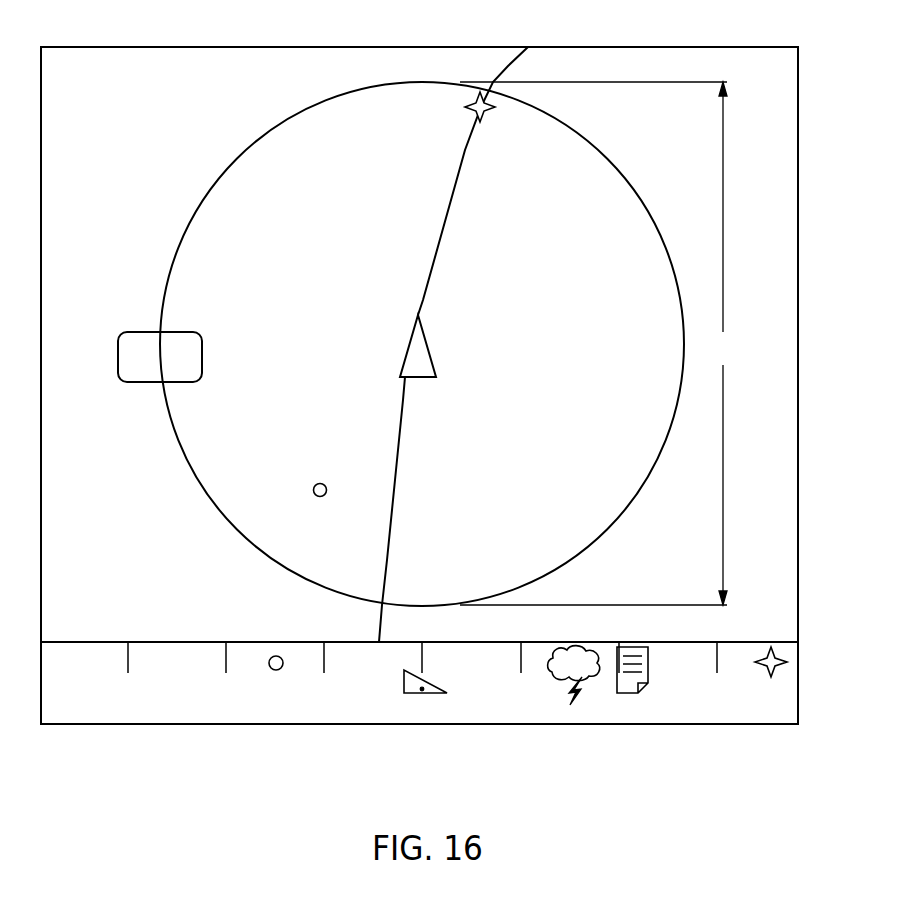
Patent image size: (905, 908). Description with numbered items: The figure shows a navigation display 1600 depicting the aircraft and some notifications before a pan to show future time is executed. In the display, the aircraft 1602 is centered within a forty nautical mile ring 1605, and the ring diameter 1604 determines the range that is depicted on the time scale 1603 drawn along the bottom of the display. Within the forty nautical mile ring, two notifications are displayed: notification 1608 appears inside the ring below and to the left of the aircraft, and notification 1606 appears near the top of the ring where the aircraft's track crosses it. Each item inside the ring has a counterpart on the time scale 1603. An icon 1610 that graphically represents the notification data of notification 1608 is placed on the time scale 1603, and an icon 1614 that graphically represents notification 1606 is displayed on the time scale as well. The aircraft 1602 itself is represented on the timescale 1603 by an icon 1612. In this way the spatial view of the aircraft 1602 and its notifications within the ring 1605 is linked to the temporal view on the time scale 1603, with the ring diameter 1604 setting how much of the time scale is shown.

The navigation display 1600 is at (191, 47).
The aircraft 1602 is at (413, 334).
The time scale 1603 is at (41, 705).
The ring diameter 1604 is at (454, 344).
The 40 nautical mile ring 1605 is at (129, 332).
The notification 1606 is at (490, 111).
The notification 1608 is at (316, 483).
The icon 1610 is at (276, 670).
The icon 1612 is at (403, 690).
The icon 1614 is at (770, 677).